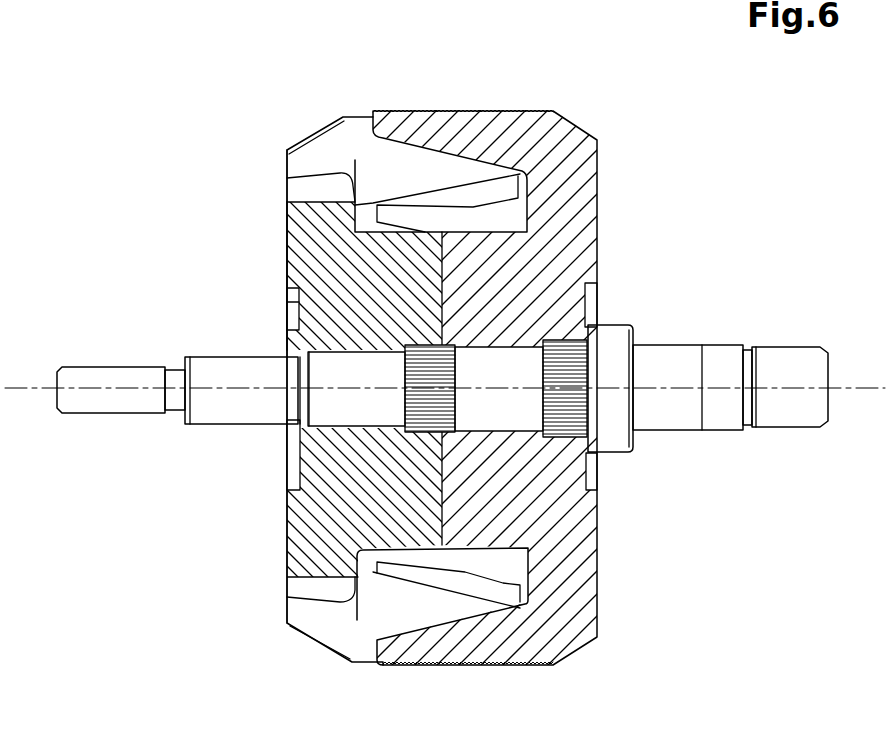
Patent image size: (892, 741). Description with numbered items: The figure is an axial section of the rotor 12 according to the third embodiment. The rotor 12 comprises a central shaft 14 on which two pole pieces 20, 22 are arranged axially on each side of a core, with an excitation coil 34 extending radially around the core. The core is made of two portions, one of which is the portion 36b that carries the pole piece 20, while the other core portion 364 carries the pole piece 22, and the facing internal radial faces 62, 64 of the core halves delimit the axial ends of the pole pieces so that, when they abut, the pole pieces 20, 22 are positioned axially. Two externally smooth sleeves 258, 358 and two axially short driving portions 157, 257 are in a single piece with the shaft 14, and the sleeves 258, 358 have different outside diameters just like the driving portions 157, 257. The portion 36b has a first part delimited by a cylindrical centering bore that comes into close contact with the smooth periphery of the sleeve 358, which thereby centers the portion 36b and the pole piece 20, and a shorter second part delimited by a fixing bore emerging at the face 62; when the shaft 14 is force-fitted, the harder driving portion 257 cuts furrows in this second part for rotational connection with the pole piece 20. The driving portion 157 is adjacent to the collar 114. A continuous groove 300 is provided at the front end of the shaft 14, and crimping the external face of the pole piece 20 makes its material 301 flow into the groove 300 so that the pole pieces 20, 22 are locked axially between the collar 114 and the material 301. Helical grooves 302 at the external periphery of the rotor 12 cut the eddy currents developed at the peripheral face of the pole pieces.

The rotor 12 is at (620, 147).
The pole piece 22 is at (602, 190).
The internal radial face 62 is at (270, 255).
The pole core section 364 is at (500, 303).
The internal radial face 64 is at (450, 252).
The pole piece 20 is at (283, 237).
The core portion 36b is at (285, 253).
The material of the pole piece 301 is at (298, 352).
The groove 300 is at (302, 378).
The central shaft 14 is at (178, 432).
The sleeve 358 is at (335, 397).
The driving portion 257 is at (407, 430).
The sleeve 258 is at (508, 412).
The driving portion 157 is at (597, 453).
The collar 114 is at (622, 332).
The excitation coil 34 is at (520, 583).
The helical grooves 302 is at (462, 668).